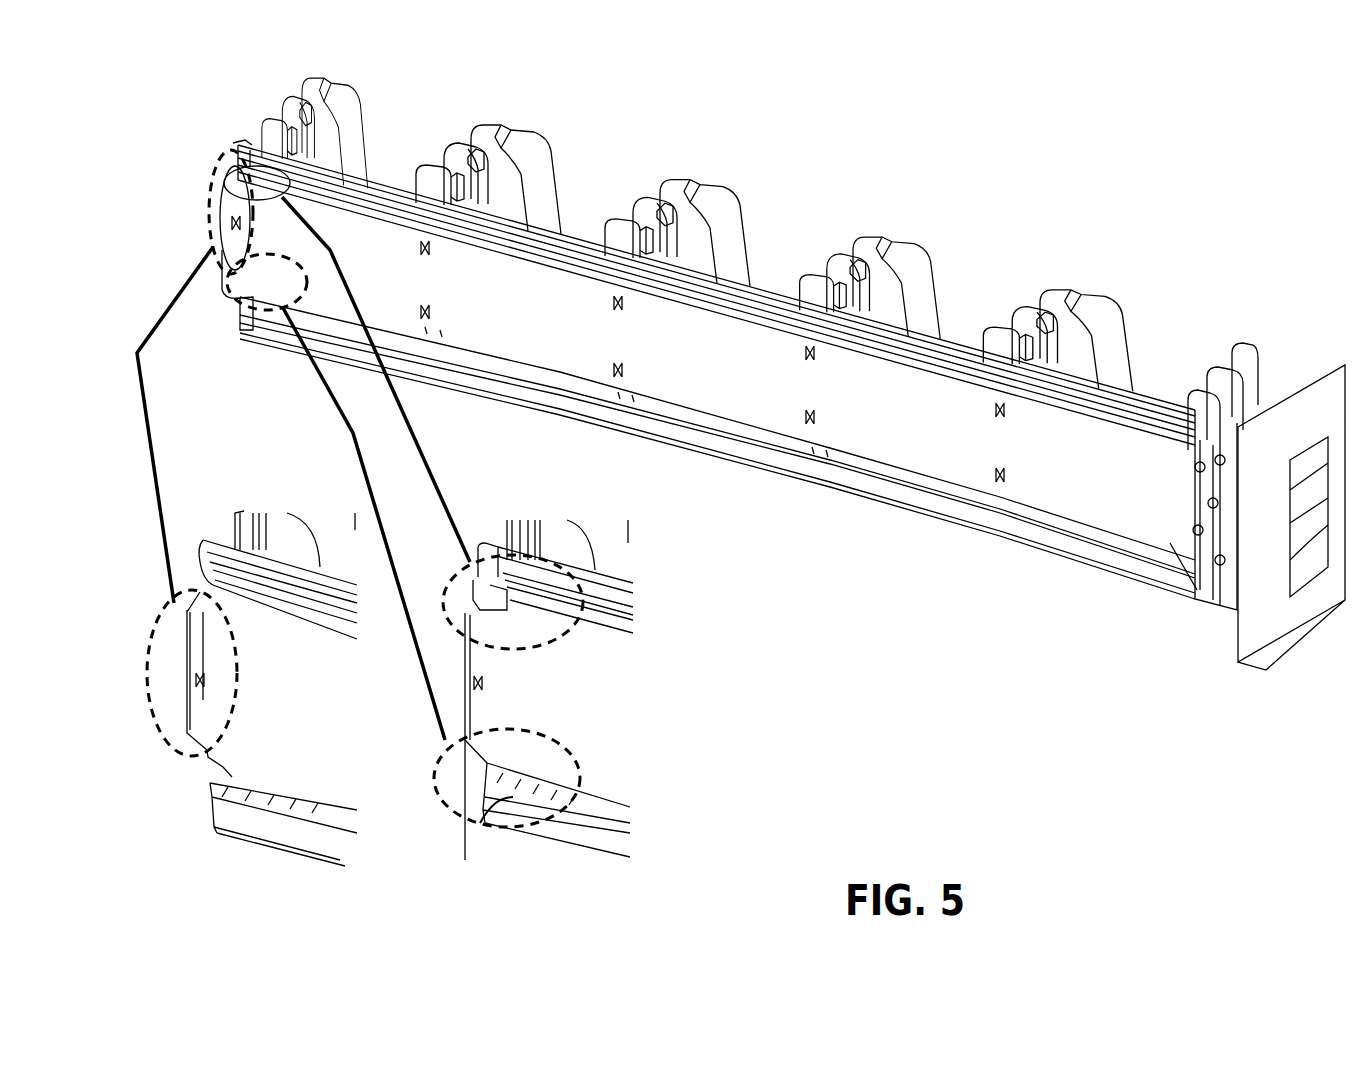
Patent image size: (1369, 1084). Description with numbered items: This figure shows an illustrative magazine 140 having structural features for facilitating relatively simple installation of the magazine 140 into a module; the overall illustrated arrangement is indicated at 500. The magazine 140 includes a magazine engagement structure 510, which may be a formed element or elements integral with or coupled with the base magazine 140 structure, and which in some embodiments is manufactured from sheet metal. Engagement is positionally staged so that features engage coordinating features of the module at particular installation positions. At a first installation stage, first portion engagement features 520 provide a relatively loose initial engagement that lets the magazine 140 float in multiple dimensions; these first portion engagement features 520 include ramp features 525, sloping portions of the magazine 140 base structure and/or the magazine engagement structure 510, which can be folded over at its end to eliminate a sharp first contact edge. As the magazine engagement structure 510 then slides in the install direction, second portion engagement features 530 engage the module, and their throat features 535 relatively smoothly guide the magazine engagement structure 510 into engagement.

The magazine assembly 500 is at (1067, 152).
The magazine engagement structure 510 is at (748, 337).
The magazine 140 is at (943, 517).
The first portion engagement features 520 is at (307, 759).
The ramp features 525 is at (183, 708).
The second portion engagement features 530 is at (550, 750).
The throat features 535 is at (487, 757).